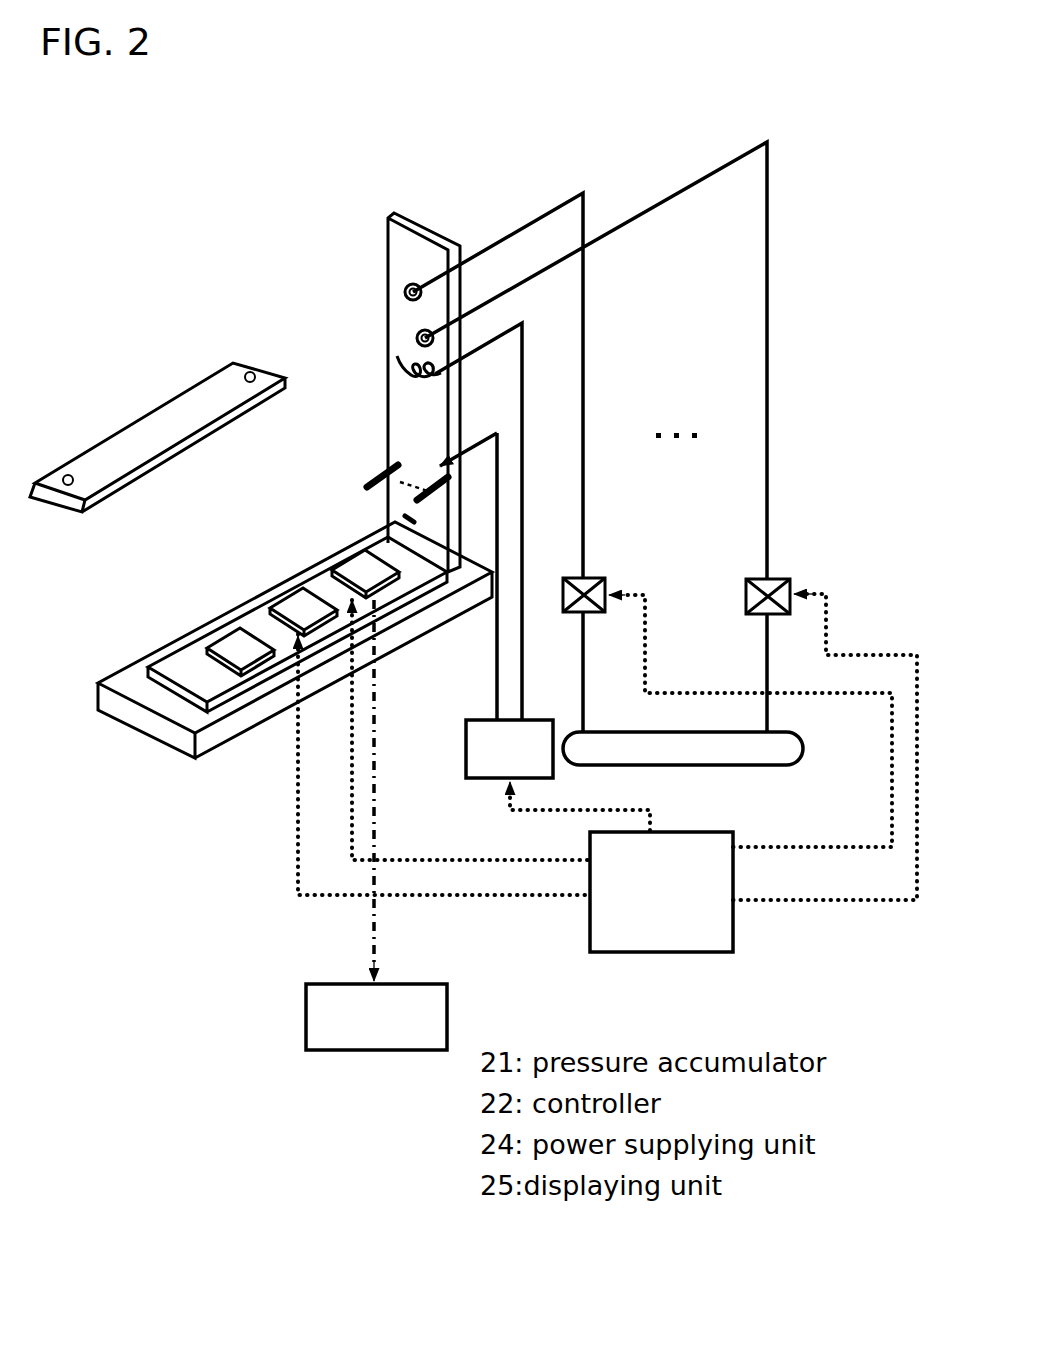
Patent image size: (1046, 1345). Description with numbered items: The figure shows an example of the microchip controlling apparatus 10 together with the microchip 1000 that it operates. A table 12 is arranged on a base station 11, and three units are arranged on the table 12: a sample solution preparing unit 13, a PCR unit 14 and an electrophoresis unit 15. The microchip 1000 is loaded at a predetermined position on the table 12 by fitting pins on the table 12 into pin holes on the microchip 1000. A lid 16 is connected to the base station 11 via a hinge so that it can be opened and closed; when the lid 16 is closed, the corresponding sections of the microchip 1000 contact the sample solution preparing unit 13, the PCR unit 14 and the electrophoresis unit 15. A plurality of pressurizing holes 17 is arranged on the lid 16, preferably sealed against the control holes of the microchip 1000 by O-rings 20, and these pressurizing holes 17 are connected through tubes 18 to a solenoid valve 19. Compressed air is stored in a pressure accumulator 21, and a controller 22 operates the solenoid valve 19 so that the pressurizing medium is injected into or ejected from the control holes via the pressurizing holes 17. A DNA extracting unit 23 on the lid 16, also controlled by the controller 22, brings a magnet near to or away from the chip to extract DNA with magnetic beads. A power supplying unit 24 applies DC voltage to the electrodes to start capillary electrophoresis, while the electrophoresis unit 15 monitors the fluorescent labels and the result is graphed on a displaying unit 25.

The microchip controlling apparatus 10 is at (835, 185).
The microchip 1000 is at (122, 452).
The base station 11 is at (126, 715).
The table 12 is at (176, 657).
The sample solution preparing unit 13 is at (228, 644).
The PCR unit 14 is at (288, 600).
The electrophoresis unit 15 is at (356, 571).
The lid 16 is at (430, 224).
The pressurizing holes 17 is at (366, 252).
The O-rings 20 is at (414, 329).
The tubes 18 is at (661, 192).
The solenoid valve 19 is at (740, 576).
The pressure accumulator 21 is at (803, 748).
The controller 22 is at (733, 832).
The DNA extracting unit 23 is at (403, 353).
The power supplying unit 24 is at (567, 698).
The displaying unit 25 is at (447, 983).